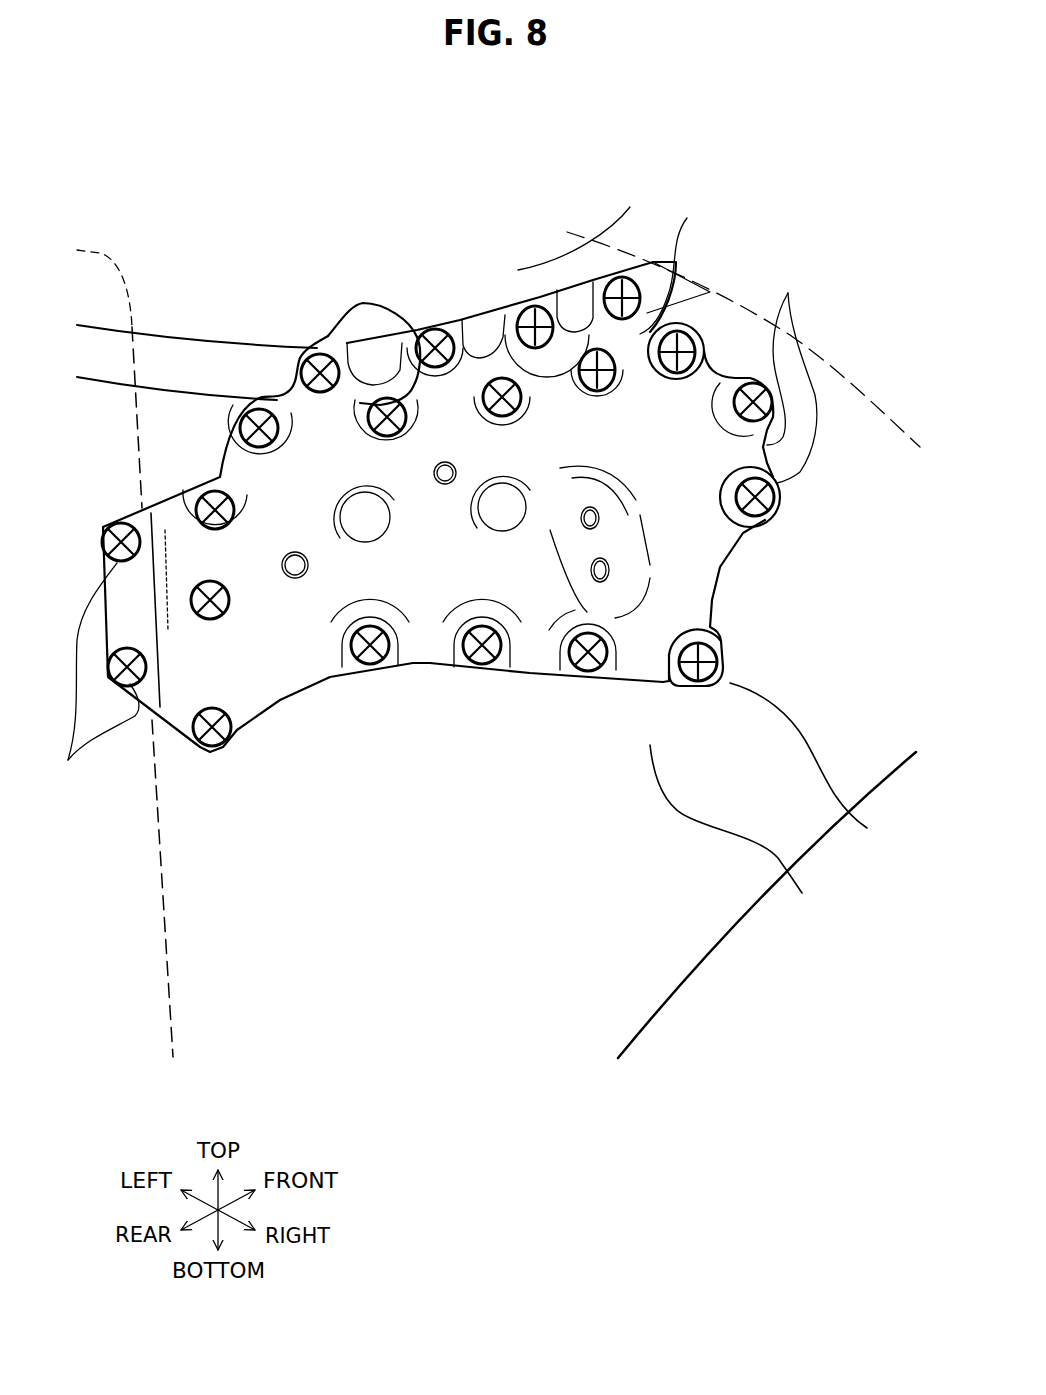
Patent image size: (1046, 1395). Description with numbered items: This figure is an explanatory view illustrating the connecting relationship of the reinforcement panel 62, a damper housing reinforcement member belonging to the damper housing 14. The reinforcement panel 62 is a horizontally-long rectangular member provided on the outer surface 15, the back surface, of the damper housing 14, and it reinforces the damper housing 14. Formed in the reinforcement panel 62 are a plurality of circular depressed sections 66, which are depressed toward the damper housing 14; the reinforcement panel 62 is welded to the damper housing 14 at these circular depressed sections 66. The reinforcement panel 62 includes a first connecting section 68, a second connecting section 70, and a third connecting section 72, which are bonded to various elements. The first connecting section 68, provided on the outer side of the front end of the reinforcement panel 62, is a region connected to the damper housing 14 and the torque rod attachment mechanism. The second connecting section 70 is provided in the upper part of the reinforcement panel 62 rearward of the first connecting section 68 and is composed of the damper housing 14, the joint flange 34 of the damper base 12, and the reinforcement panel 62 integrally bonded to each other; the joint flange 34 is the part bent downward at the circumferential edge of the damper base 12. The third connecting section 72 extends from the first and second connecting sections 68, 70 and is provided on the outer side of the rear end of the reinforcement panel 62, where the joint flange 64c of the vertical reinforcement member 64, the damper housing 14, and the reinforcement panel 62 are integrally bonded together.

The damper base 12 is at (584, 224).
The damper housing 14 is at (729, 951).
The outer surface 15 is at (740, 832).
The joint flange 34 is at (697, 300).
The reinforcement panel 62 is at (412, 305).
The vertical reinforcement member 64 is at (143, 300).
The joint flange 64c is at (160, 878).
The circular depressed section 66 is at (814, 767).
The first connecting section 68 is at (863, 374).
The second connecting section 70 is at (362, 304).
The third connecting section 72 is at (98, 722).